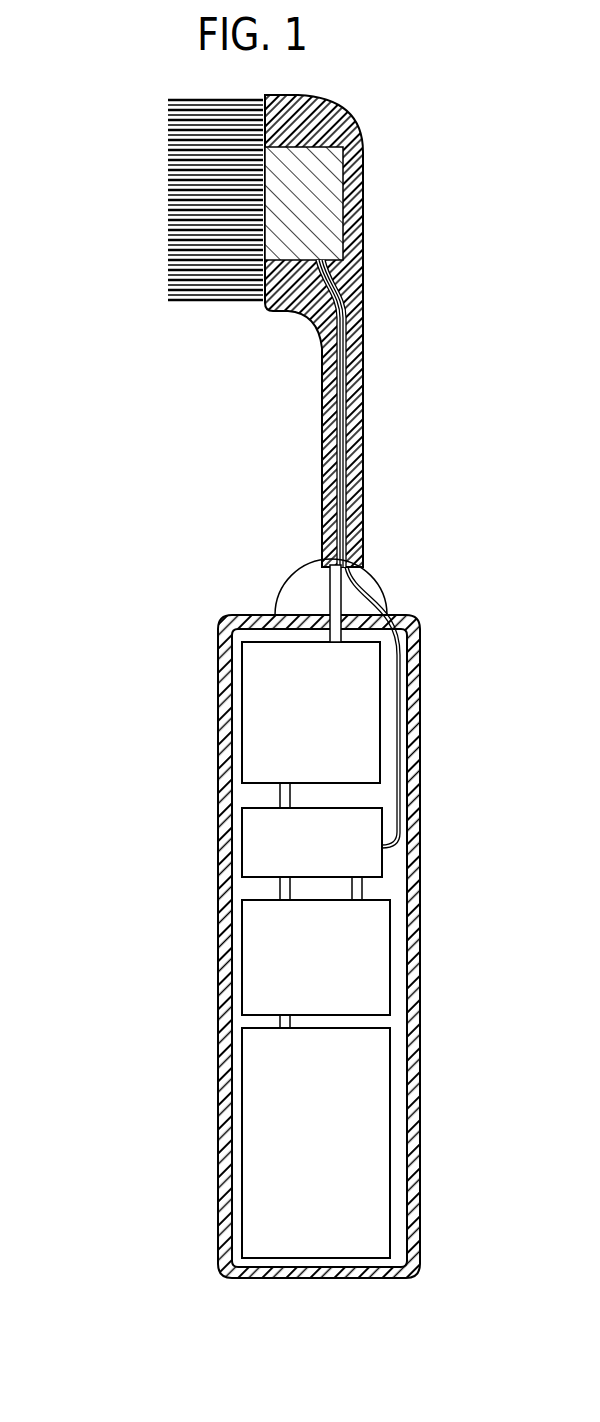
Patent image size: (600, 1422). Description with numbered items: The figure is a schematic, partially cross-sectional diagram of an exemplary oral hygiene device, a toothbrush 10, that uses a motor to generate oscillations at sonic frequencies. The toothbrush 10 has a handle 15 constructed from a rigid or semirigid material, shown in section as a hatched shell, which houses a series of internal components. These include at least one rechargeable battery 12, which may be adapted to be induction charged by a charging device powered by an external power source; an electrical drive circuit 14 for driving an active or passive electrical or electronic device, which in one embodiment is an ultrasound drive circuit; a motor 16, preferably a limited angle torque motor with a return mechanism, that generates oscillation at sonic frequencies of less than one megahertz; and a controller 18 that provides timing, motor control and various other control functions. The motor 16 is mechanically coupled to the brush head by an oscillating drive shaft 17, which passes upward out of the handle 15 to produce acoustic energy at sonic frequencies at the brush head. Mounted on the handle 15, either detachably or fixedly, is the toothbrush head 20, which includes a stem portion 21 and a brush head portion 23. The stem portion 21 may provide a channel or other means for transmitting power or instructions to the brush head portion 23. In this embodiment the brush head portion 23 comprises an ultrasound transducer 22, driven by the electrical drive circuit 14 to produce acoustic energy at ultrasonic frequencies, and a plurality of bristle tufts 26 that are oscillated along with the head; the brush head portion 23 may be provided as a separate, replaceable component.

The toothbrush 10 is at (293, 686).
The rechargeable battery 12 is at (293, 1079).
The electrical drive circuit 14 is at (293, 855).
The handle 15 is at (420, 928).
The motor 16 is at (293, 730).
The oscillating drive shaft 17 is at (335, 590).
The controller 18 is at (293, 950).
The toothbrush head 20 is at (250, 331).
The stem portion 21 is at (364, 378).
The ultrasound transducer 22 is at (322, 190).
The brush head portion 23 is at (168, 200).
The bristle tufts 26 is at (168, 200).